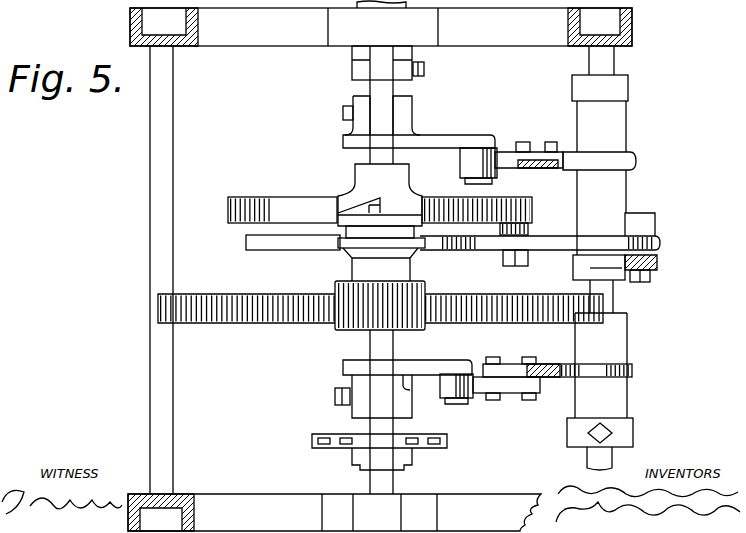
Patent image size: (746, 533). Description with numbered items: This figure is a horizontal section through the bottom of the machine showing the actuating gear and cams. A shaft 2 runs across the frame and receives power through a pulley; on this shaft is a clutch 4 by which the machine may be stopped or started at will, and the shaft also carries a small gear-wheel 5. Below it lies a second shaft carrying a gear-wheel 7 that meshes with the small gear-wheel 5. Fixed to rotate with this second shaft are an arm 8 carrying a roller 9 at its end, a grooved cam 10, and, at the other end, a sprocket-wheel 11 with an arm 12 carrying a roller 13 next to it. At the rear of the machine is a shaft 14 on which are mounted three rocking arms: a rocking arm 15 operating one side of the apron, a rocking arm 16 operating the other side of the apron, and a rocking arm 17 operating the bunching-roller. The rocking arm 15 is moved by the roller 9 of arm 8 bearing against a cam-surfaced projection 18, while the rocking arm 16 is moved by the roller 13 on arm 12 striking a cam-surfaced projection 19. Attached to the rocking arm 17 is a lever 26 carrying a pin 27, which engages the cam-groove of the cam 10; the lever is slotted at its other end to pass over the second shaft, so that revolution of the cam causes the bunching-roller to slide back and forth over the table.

The shaft 2 is at (378, 87).
The clutch 4 is at (352, 192).
The small gear-wheel 5 is at (348, 332).
The gear-wheel 7 is at (264, 326).
The arm 8 is at (466, 136).
The roller 9 is at (460, 171).
The grooved cam 10 is at (532, 210).
The sprocket-wheel 11 is at (420, 434).
The arm 12 is at (424, 362).
The roller 13 is at (442, 382).
The shaft 14 is at (614, 65).
The rocking arm 15 is at (636, 163).
The rocking arm 16 is at (632, 373).
The rocking arm 17 is at (657, 243).
The projection 18 is at (530, 152).
The projection 19 is at (506, 400).
The lever 26 is at (308, 254).
The pin 27 is at (530, 232).